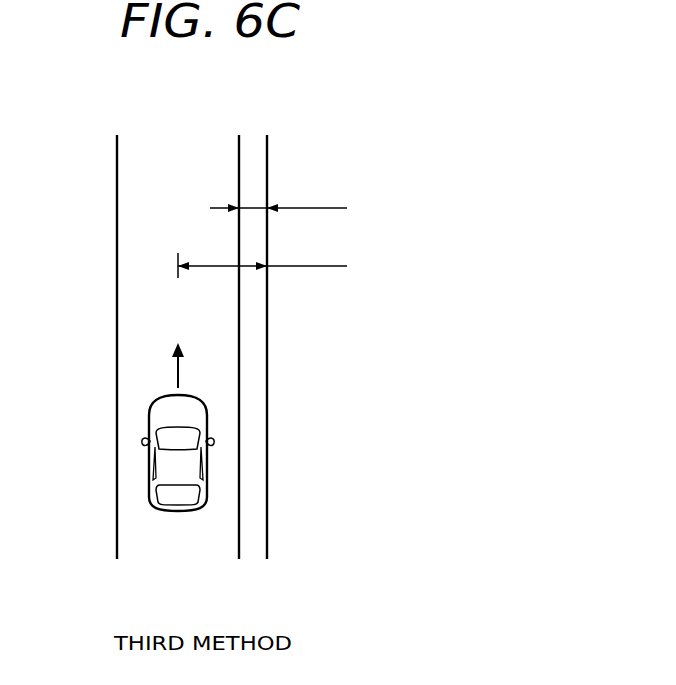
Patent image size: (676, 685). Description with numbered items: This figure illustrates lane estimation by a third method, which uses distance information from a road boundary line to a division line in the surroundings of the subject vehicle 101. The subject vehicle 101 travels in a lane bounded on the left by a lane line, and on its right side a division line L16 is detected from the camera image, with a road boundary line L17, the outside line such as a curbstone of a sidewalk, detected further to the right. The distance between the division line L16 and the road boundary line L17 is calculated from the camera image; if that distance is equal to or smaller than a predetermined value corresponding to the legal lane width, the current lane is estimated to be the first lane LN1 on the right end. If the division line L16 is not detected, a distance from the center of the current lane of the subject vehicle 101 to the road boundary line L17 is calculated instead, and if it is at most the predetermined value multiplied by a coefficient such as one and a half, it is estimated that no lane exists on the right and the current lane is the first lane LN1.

The subject vehicle 101 is at (150, 455).
The first lane LN1 is at (193, 160).
The division line L16 is at (239, 533).
The road boundary line L17 is at (267, 533).